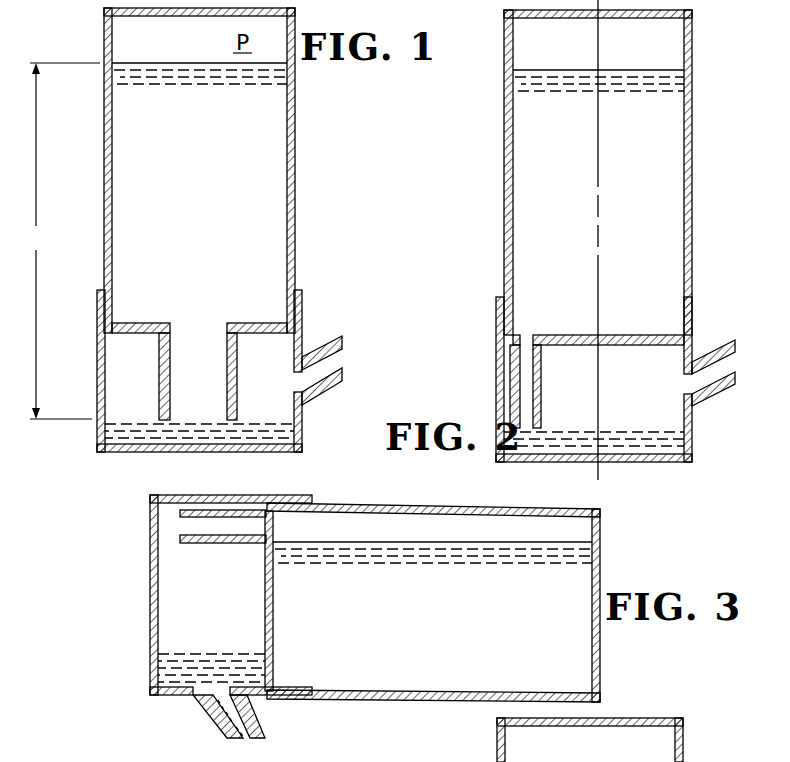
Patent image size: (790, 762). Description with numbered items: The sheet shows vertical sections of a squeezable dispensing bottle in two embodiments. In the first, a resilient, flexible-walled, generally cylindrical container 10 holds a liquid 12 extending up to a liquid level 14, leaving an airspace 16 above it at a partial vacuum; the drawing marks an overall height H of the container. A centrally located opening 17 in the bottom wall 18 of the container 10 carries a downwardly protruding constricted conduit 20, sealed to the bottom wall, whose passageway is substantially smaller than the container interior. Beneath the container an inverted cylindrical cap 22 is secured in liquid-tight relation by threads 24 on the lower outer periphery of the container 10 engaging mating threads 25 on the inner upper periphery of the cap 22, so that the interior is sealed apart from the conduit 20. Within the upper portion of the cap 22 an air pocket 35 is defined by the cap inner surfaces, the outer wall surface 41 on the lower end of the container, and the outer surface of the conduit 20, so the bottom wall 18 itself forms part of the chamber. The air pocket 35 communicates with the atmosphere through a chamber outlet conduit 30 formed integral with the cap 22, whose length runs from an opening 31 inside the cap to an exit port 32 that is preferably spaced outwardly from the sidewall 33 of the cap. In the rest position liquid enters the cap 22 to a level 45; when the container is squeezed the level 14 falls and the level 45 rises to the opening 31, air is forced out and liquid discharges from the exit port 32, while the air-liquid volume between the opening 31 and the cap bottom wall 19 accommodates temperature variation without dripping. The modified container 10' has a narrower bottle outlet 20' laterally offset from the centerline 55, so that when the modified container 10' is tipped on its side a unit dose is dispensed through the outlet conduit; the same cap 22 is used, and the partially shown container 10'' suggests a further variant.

In FIG. 1, the container 10 is at (227, 170).
In FIG. 2, the modified container 10' is at (644, 172).
In FIG. 3, the modified container 10' is at (432, 618).
In FIG. 3, the container body (third embodiment) 10'' is at (622, 740).
In FIG. 1, the liquid 12 is at (167, 76).
In FIG. 2, the liquid 12 is at (598, 80).
In FIG. 3, the liquid 12 is at (432, 552).
In FIG. 1, the liquid level 14 is at (201, 63).
In FIG. 2, the liquid level 14 is at (652, 71).
In FIG. 1, the airspace 16 is at (168, 53).
In FIG. 2, the airspace 16 is at (558, 53).
In FIG. 1, the opening 17 is at (190, 318).
In FIG. 2, the opening 17 is at (529, 334).
In FIG. 3, the opening 17 is at (282, 530).
In FIG. 1, the bottom wall 18 is at (260, 323).
In FIG. 2, the bottom wall 18 is at (598, 340).
In FIG. 1, the cap bottom wall 19 is at (278, 445).
In FIG. 1, the constricted conduit 20 is at (176, 376).
In FIG. 2, the bottle outlet 20' is at (553, 386).
In FIG. 3, the bottle outlet 20' is at (222, 547).
In FIG. 1, the cap 22 is at (96, 355).
In FIG. 2, the cap 22 is at (494, 359).
In FIG. 3, the cap 22 is at (172, 694).
In FIG. 1, the threads 24 is at (112, 297).
In FIG. 1, the mating threads 25 is at (100, 297).
In FIG. 1, the chamber outlet conduit 30 is at (320, 345).
In FIG. 2, the chamber outlet conduit 30 is at (720, 349).
In FIG. 3, the chamber outlet conduit 30 is at (260, 723).
In FIG. 1, the opening 31 is at (292, 383).
In FIG. 2, the opening 31 is at (680, 392).
In FIG. 1, the exit port 32 is at (345, 353).
In FIG. 2, the exit port 32 is at (736, 363).
In FIG. 1, the sidewall 33 is at (305, 416).
In FIG. 2, the sidewall 33 is at (693, 440).
In FIG. 1, the air pocket 35 is at (278, 369).
In FIG. 2, the air pocket 35 is at (658, 383).
In FIG. 1, the outer wall surface 41 is at (128, 332).
In FIG. 1, the level 45 is at (134, 420).
In FIG. 2, the level 45 is at (662, 434).
In FIG. 3, the level 45 is at (211, 695).
In FIG. 2, the centerline 55 is at (599, 163).
In FIG. 1, the height dimension H is at (64, 241).